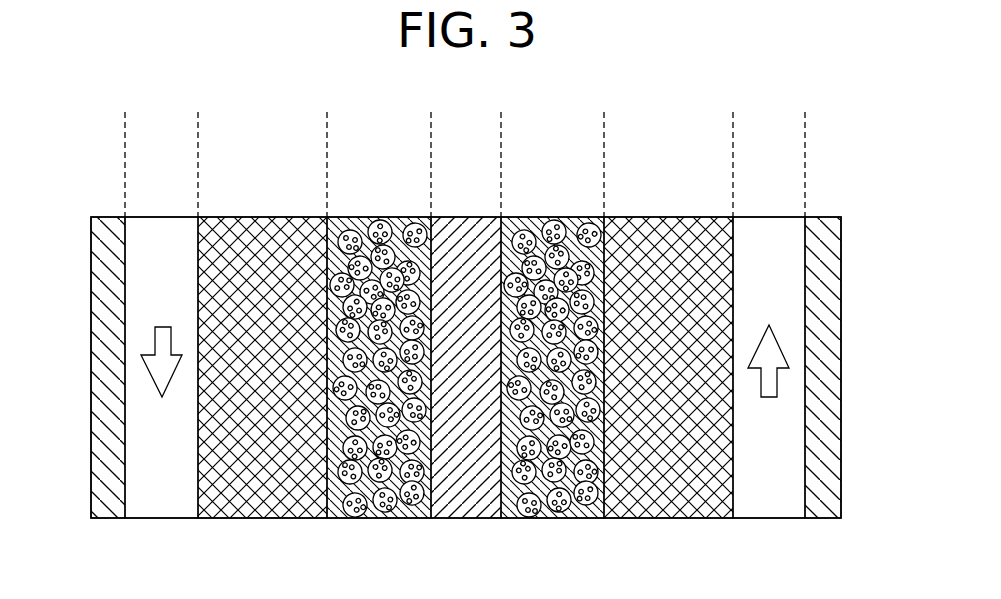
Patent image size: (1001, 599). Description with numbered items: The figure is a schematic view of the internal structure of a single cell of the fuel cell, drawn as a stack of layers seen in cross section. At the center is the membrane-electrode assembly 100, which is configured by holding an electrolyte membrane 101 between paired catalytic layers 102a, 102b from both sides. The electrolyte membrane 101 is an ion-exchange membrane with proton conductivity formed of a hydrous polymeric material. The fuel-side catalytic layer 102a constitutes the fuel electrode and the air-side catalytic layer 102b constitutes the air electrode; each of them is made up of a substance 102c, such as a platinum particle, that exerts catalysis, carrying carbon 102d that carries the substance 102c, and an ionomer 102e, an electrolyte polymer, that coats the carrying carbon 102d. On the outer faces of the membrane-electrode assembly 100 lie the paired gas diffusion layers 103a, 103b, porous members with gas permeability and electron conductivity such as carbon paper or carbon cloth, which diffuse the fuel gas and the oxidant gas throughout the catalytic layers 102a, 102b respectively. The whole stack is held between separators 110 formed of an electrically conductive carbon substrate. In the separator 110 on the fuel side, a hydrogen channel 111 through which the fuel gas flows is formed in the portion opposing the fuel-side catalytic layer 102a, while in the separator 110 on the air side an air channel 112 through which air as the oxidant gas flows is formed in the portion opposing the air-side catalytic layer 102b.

The membrane-electrode assembly 100 is at (449, 321).
The electrolyte membrane 101 is at (431, 172).
The fuel-side catalytic layer 102a is at (395, 355).
The air-side catalytic layer 102b is at (552, 323).
The substance that exerts catalysis 102c is at (383, 519).
The carrying carbon 102d is at (338, 519).
The ionomer 102e is at (415, 519).
The gas diffusion layer 103a is at (327, 172).
The gas diffusion layer 103b is at (733, 172).
The separator 110 is at (107, 371).
The hydrogen channel 111 is at (125, 172).
The air channel 112 is at (733, 172).